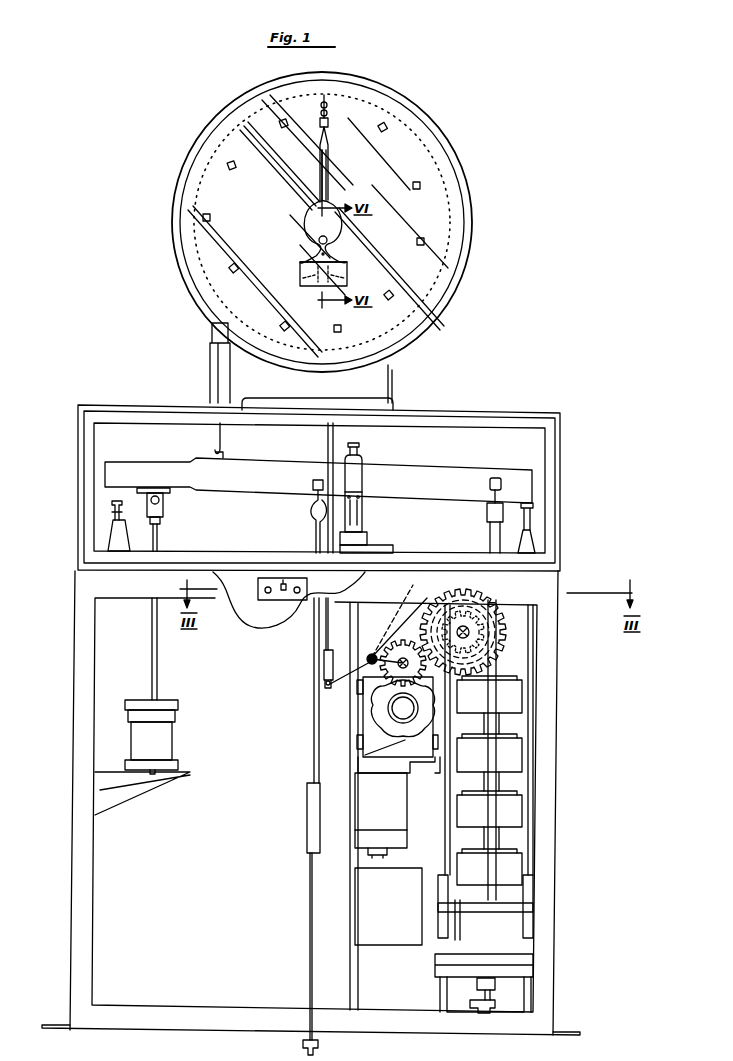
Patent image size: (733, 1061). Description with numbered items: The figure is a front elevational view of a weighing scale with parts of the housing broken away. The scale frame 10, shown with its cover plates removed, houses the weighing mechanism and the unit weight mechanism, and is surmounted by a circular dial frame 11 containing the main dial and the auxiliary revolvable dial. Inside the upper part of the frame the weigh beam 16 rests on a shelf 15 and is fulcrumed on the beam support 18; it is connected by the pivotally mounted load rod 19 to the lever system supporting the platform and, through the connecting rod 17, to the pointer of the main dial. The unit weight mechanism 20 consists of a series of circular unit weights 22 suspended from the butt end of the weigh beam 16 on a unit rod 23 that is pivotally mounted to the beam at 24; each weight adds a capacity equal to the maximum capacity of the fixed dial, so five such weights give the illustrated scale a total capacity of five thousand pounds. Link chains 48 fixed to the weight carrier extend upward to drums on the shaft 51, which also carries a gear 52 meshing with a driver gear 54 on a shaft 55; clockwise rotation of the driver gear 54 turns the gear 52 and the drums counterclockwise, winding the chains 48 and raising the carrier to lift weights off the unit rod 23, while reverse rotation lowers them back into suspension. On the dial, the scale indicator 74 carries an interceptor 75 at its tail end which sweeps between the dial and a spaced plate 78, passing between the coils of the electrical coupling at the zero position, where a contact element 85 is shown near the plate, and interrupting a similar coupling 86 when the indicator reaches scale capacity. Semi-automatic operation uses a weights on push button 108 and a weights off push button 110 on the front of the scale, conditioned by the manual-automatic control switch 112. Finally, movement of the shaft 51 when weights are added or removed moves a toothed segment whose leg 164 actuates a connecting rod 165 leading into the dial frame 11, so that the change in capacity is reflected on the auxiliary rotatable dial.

The scale frame 10 is at (560, 576).
The dial frame 11 is at (425, 103).
The shelf 15 is at (190, 552).
The weigh beam 16 is at (272, 488).
The connecting rod 17 is at (215, 433).
The beam support 18 is at (362, 506).
The load rod 19 is at (313, 756).
The unit weight mechanism 20 is at (525, 752).
The unit weights 22 is at (512, 818).
The unit rod 23 is at (490, 539).
The pivotal mounting 24 is at (487, 512).
The link chains 48 is at (497, 841).
The shaft 51 is at (468, 632).
The gear 52 is at (503, 637).
The driver gear 54 is at (398, 648).
The shaft 55 is at (372, 654).
The scale indicator 74 is at (326, 180).
The interceptor 75 is at (335, 262).
The plate 78 is at (300, 270).
The contact 85 is at (312, 280).
The coupling 86 is at (345, 273).
The weights on push button 108 is at (297, 594).
The weights off push button 110 is at (268, 593).
The manual-automatic control switch 112 is at (283, 593).
The segment leg 164 is at (347, 675).
The connecting rod 165 is at (327, 642).